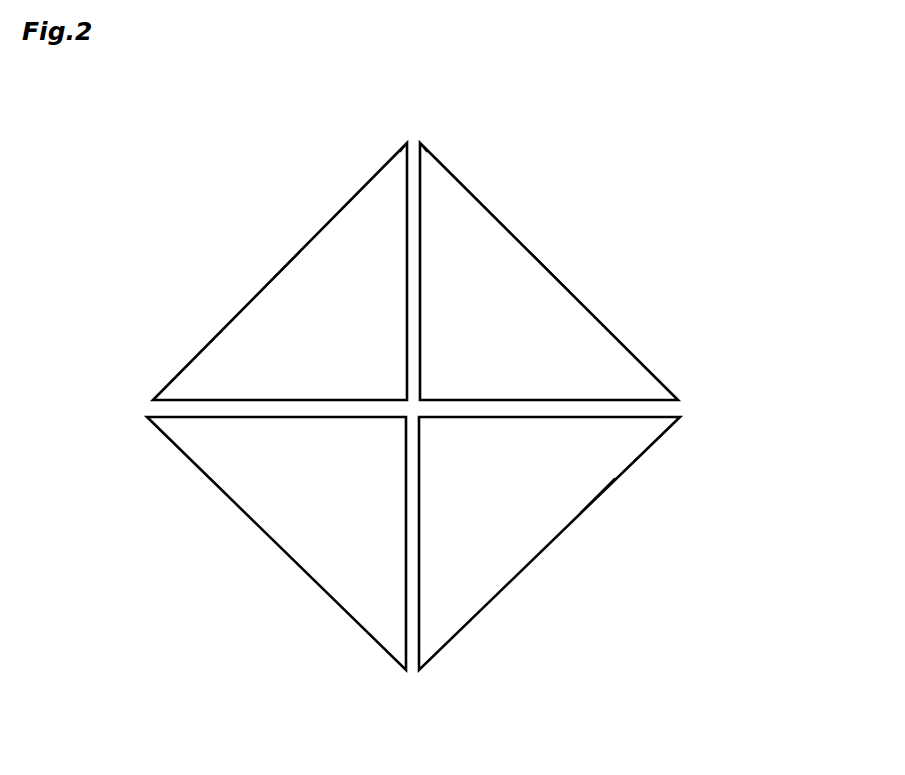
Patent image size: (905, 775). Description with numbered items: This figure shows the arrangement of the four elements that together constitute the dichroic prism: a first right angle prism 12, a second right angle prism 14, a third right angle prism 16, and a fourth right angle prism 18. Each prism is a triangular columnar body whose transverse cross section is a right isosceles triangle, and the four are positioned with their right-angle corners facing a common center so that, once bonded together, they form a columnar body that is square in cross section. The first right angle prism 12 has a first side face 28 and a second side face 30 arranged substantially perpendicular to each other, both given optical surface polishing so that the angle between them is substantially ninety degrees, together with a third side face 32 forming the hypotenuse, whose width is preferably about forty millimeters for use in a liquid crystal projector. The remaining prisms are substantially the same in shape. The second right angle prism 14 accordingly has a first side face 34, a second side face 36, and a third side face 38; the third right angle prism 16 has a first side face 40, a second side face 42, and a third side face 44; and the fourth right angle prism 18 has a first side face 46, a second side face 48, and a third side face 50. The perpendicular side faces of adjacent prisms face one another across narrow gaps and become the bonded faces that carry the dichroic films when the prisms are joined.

The first right angle prism 12 is at (385, 175).
The second right angle prism 14 is at (443, 175).
The third right angle prism 16 is at (520, 560).
The fourth right angle prism 18 is at (305, 560).
The first side face 28 is at (408, 140).
The second side face 30 is at (157, 403).
The third side face 32 is at (280, 262).
The first side face 34 is at (678, 405).
The second side face 36 is at (418, 145).
The third side face 38 is at (545, 262).
The first side face 40 is at (417, 670).
The second side face 42 is at (682, 414).
The third side face 44 is at (588, 507).
The first side face 46 is at (147, 412).
The second side face 48 is at (408, 670).
The third side face 50 is at (235, 507).